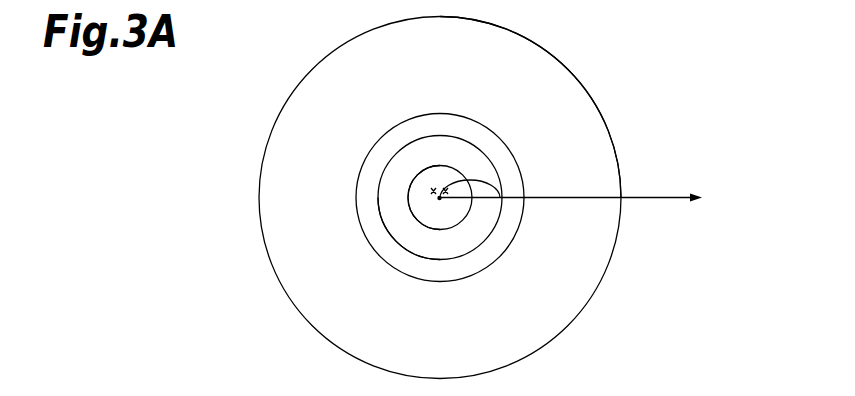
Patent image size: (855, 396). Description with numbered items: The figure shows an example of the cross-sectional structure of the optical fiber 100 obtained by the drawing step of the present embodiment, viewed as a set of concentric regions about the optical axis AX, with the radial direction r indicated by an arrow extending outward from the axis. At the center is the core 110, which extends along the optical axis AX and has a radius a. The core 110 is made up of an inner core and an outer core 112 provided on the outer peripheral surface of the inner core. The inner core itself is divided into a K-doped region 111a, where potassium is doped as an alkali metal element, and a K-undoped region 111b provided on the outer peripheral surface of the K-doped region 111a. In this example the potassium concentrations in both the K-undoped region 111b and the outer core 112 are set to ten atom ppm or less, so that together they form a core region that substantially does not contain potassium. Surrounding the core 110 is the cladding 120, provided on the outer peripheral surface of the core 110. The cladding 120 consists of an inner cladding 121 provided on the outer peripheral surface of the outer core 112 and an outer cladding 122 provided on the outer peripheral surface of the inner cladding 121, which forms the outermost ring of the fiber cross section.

The optical fiber 100 is at (604, 97).
The core 110 is at (175, 152).
The K-doped region 111a is at (428, 186).
The K-undoped region 111b is at (411, 192).
The outer core 112 is at (392, 207).
The cladding 120 is at (676, 221).
The inner cladding 121 is at (510, 222).
The outer cladding 122 is at (597, 267).
The optical axis AX is at (439, 200).
The radius a is at (470, 176).
The radial direction r is at (578, 197).